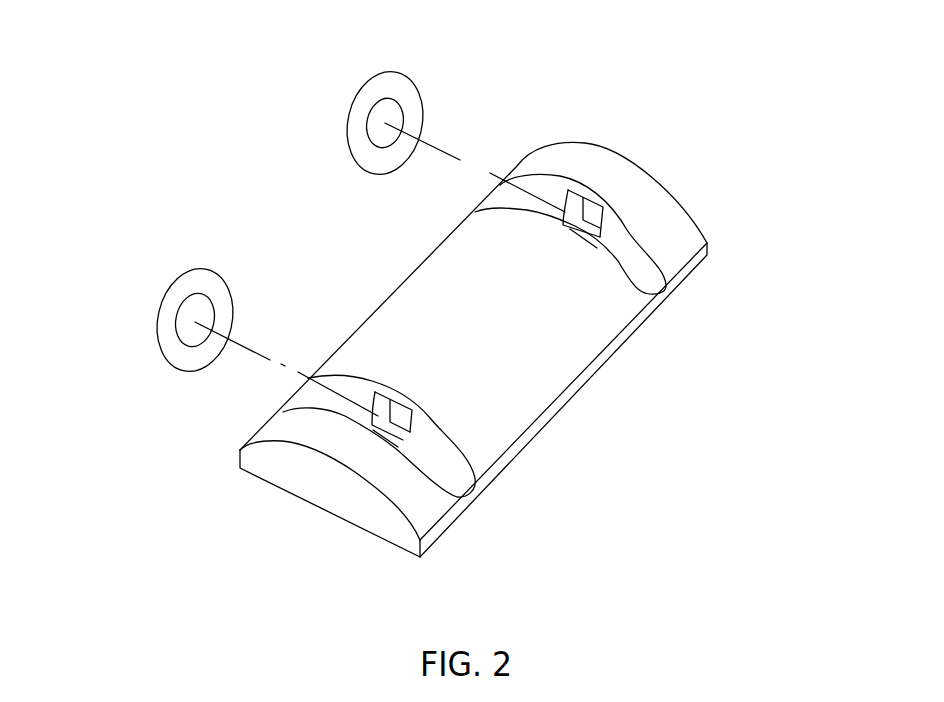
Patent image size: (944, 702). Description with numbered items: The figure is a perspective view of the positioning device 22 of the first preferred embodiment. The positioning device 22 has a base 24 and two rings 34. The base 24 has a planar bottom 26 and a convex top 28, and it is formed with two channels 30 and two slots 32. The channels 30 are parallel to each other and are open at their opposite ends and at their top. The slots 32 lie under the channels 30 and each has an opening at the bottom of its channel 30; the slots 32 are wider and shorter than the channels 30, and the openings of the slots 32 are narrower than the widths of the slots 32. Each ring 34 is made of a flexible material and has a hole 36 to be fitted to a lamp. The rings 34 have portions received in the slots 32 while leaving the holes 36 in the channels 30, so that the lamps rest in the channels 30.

The positioning device 22 is at (770, 106).
The base 24 is at (693, 220).
The planar bottom 26 is at (348, 518).
The convex top 28 is at (527, 378).
The channels 30 is at (632, 237).
The slots 32 is at (577, 205).
The rings 34 is at (413, 98).
The hole 36 is at (380, 143).